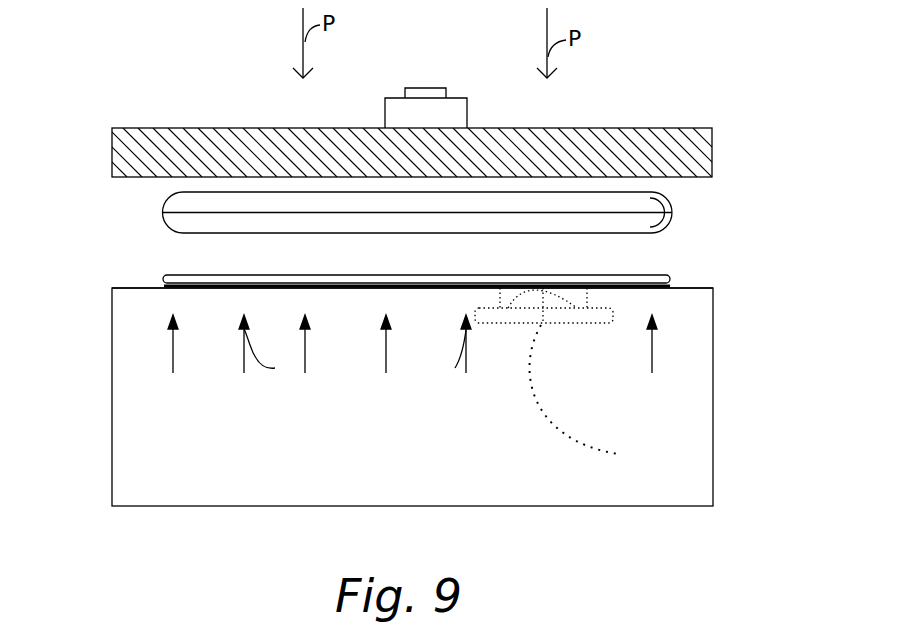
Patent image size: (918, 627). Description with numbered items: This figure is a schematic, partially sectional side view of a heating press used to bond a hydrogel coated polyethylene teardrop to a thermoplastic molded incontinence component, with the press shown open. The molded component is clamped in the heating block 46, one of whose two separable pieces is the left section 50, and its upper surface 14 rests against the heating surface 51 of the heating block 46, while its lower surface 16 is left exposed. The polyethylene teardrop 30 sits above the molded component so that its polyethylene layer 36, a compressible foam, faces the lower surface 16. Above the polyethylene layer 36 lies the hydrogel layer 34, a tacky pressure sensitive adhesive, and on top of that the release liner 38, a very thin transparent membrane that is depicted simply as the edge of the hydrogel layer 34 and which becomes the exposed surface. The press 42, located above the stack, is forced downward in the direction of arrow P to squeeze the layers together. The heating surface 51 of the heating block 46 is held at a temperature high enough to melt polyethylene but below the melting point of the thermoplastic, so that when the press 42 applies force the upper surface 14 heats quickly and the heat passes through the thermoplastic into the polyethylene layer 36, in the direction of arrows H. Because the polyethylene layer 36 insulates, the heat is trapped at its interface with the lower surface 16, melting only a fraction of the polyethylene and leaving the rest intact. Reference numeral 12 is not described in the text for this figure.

The press 42 is at (692, 128).
The release liner 38 is at (638, 192).
The hydrogel layer 34 is at (650, 200).
The polyethylene layer 36 is at (650, 226).
The polyethylene teardrop 30 is at (395, 198).
The substrate 12 is at (449, 288).
The lower surface 16 is at (200, 275).
The upper surface 14 is at (187, 287).
The heating surface 51 is at (130, 289).
The heating block 46 is at (414, 407).
The left section 50 is at (547, 478).